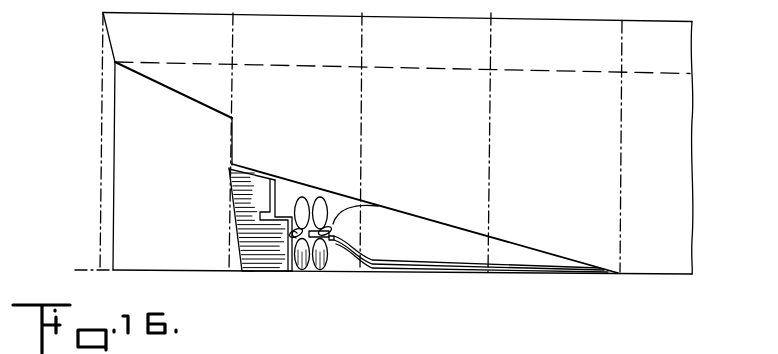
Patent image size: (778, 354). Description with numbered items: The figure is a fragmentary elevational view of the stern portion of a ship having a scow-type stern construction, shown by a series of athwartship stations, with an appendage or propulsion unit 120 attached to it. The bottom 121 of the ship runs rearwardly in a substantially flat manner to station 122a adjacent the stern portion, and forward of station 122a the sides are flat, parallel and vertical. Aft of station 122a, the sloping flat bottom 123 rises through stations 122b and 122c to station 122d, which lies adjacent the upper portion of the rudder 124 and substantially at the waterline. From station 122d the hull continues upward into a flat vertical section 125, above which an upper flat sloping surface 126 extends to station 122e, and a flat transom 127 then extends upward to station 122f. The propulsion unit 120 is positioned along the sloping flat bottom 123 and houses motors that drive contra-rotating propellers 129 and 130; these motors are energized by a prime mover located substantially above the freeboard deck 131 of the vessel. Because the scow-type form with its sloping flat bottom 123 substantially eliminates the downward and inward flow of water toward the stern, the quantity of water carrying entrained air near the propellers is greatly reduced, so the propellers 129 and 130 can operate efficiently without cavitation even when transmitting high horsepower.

The appendage or propulsion unit 120 is at (410, 247).
The bottom 121 is at (675, 274).
The station 122a is at (627, 276).
The station 122b is at (493, 275).
The station 122c is at (362, 273).
The station 122d is at (229, 272).
The station 122e is at (115, 272).
The station 122f is at (100, 272).
The sloping flat bottom 123 is at (341, 194).
The rudder 124 is at (236, 166).
The flat vertical section 125 is at (231, 142).
The upper flat sloping surface 126 is at (162, 87).
The flat transom 127 is at (108, 41).
The contra-rotating propeller 129 is at (327, 271).
The contra-rotating propeller 130 is at (298, 271).
The freeboard deck 131 is at (444, 17).